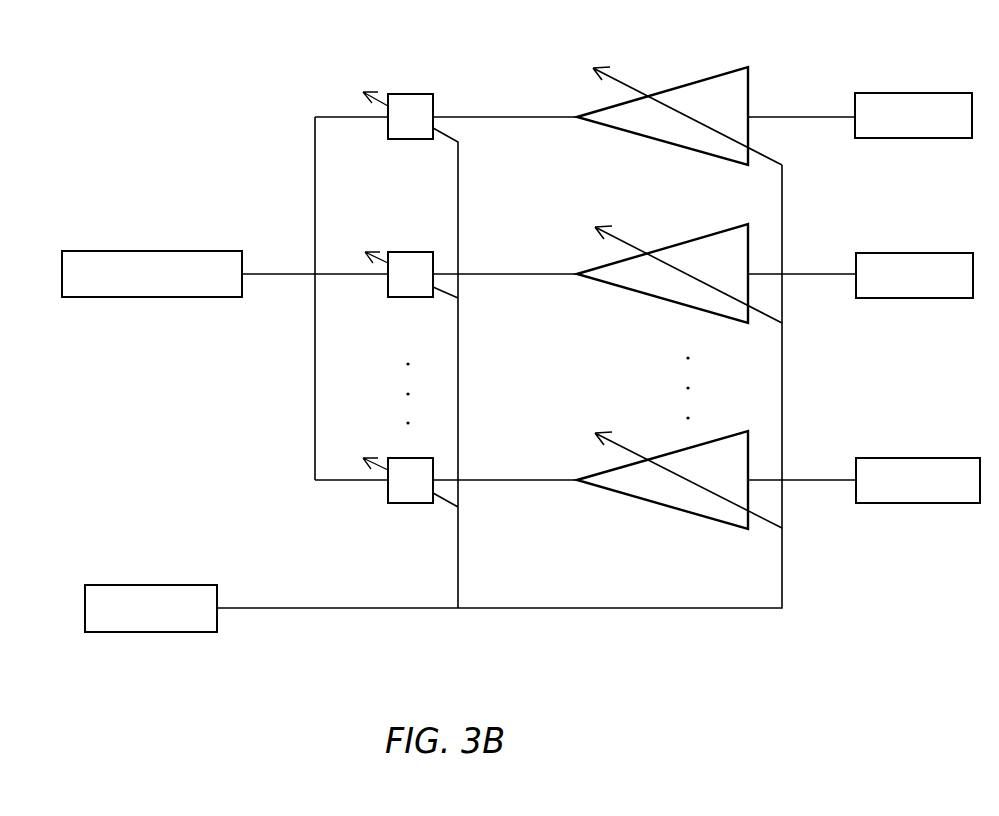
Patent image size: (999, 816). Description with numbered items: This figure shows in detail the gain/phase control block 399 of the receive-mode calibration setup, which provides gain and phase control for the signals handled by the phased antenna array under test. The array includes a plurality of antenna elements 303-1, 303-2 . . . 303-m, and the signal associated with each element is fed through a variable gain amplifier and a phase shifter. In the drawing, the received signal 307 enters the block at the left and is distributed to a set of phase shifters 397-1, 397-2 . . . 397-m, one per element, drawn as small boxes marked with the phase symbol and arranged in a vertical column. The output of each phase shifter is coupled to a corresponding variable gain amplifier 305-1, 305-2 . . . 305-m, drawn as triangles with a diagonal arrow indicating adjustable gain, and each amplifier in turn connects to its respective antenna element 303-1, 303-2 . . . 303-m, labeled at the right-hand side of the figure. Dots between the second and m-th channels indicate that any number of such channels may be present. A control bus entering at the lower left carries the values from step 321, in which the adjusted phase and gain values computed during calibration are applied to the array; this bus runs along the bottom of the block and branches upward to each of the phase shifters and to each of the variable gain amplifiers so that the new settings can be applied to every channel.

The gain/phase control block 399 is at (142, 138).
The received signal 307 is at (225, 288).
The phase shifter 397-1 is at (407, 94).
The phase shifter 397-2 is at (403, 298).
The phase shifter 397-m is at (410, 505).
The variable gain amplifier 305-1 is at (747, 67).
The variable gain amplifier 305-2 is at (583, 280).
The variable gain amplifier 305-m is at (697, 518).
The antenna element 303-1 is at (913, 115).
The antenna element 303-2 is at (914, 275).
The antenna element 303-m is at (918, 480).
The step of applying new values to the array 321 is at (151, 608).